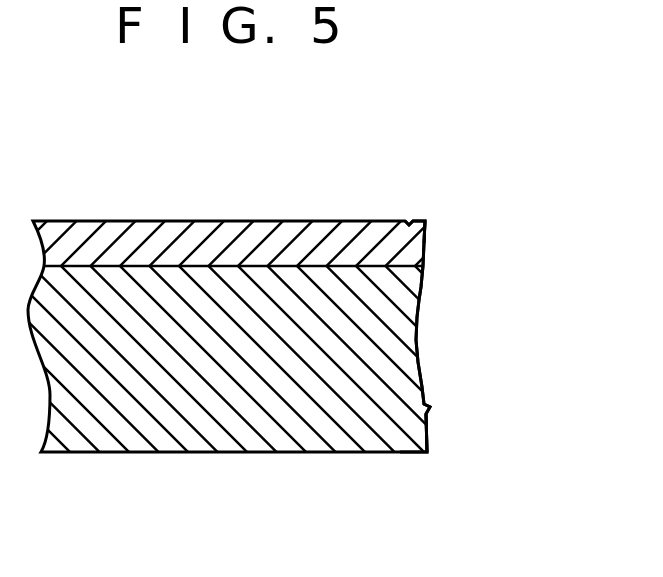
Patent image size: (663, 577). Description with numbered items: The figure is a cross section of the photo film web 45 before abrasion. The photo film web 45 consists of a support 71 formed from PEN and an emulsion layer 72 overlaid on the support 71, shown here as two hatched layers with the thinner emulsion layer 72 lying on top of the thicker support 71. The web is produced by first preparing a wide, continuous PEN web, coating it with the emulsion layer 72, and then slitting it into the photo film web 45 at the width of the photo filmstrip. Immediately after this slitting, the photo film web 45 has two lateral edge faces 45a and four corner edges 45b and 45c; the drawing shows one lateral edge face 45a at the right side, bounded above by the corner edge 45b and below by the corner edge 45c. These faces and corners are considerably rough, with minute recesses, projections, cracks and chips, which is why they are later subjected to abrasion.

The photo film web 45 is at (287, 200).
The lateral edge face 45a is at (420, 328).
The corner edge 45b is at (428, 222).
The corner edge 45c is at (427, 452).
The support 71 is at (198, 438).
The emulsion layer 72 is at (170, 231).